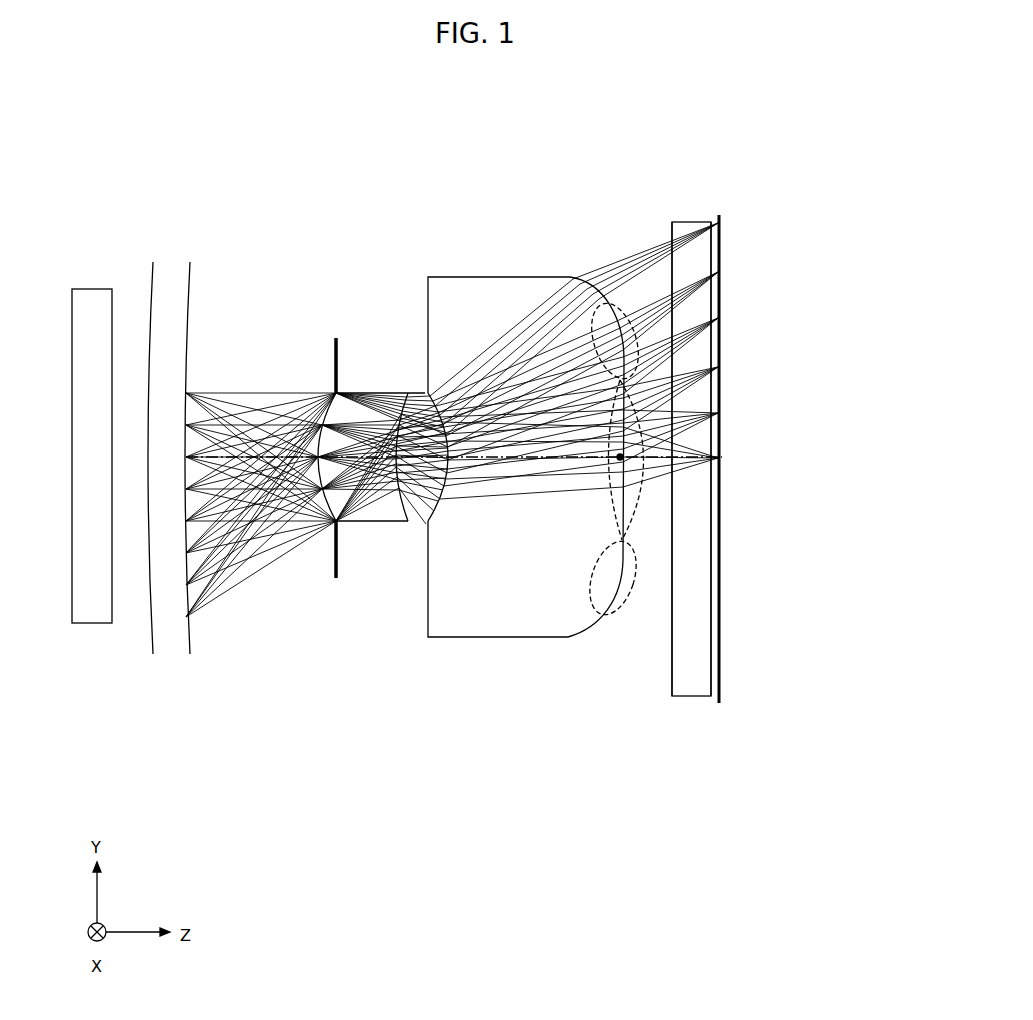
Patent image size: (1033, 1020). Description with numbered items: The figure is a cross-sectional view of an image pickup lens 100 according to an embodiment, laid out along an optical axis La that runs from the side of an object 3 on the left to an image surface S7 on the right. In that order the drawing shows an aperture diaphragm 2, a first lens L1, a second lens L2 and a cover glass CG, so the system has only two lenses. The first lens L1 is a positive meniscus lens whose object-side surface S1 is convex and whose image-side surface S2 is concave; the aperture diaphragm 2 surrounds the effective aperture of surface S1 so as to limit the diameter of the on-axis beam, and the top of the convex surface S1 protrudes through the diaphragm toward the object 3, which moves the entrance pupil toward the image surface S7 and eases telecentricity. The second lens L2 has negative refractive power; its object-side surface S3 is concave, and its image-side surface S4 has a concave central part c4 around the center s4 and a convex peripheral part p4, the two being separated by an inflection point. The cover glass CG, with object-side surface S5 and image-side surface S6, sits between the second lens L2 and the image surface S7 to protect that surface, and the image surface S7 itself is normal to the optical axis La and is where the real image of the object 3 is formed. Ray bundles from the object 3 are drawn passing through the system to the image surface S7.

The image pickup lens 100 is at (478, 141).
The object 3 is at (92, 615).
The aperture diaphragm 2 is at (336, 578).
The optical axis La is at (417, 405).
The first lens L1 is at (399, 532).
The second lens L2 is at (659, 425).
The surface S1 is at (322, 508).
The surface S2 is at (402, 516).
The surface S3 is at (444, 509).
The surface S4 is at (622, 584).
The center s4 is at (617, 459).
The peripheral part p4 is at (638, 326).
The central part c4 is at (643, 480).
The surface S5 is at (672, 633).
The surface S6 is at (712, 633).
The image surface S7 is at (720, 666).
The cover glass CG is at (729, 484).